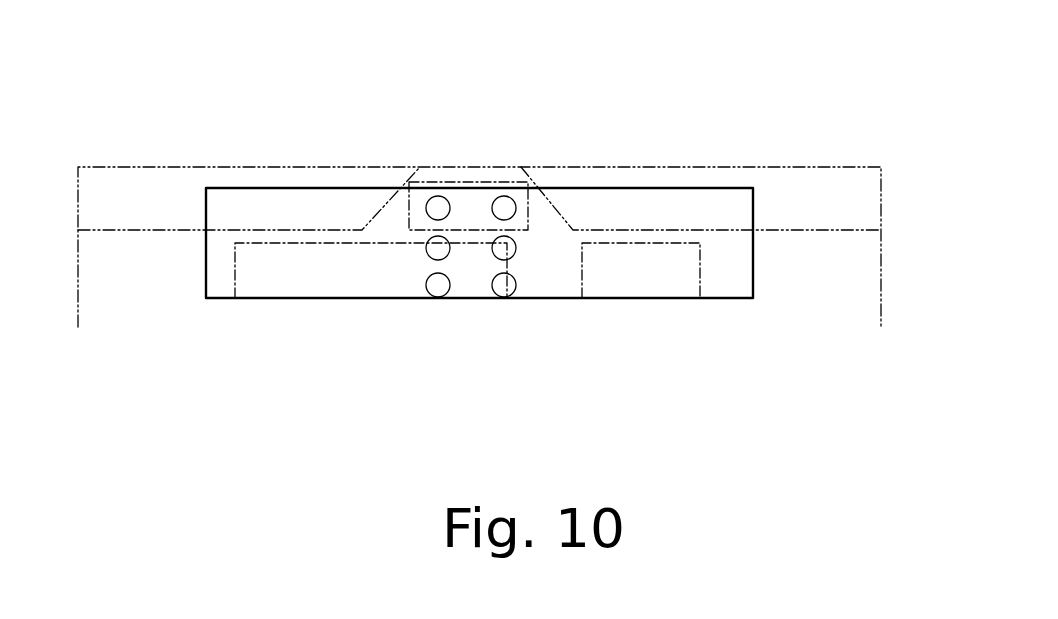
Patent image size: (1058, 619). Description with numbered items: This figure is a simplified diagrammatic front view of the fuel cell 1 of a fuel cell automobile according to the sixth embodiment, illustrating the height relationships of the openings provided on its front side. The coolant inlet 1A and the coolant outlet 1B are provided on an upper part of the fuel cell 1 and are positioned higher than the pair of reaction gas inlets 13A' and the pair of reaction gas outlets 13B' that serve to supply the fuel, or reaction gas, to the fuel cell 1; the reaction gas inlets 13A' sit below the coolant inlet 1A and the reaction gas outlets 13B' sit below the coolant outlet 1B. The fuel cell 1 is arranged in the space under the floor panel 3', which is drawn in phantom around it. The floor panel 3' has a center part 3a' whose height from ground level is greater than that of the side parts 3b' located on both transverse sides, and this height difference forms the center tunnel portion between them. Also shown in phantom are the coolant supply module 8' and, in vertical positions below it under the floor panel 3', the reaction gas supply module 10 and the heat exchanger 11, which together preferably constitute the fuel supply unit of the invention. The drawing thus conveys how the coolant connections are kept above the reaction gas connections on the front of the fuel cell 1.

The fuel cell 1 is at (732, 262).
The coolant inlet 1A is at (438, 205).
The coolant outlet 1B is at (504, 205).
The floor panel 3' is at (479, 147).
The center part of the floor panel 3a' is at (482, 141).
The side parts of the floor panel 3b' is at (479, 186).
The coolant supply module 8' is at (345, 156).
The reaction gas supply module 10 is at (287, 282).
The heat exchanger 11 is at (673, 262).
The reaction gas inlets 13A' is at (401, 310).
The reaction gas outlets 13B' is at (579, 310).